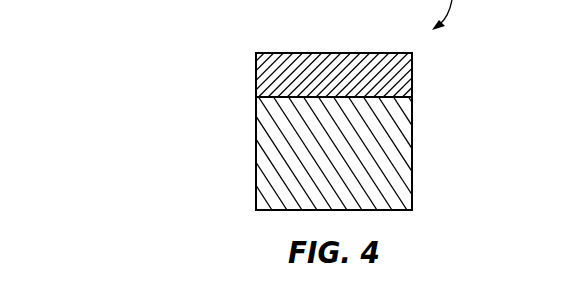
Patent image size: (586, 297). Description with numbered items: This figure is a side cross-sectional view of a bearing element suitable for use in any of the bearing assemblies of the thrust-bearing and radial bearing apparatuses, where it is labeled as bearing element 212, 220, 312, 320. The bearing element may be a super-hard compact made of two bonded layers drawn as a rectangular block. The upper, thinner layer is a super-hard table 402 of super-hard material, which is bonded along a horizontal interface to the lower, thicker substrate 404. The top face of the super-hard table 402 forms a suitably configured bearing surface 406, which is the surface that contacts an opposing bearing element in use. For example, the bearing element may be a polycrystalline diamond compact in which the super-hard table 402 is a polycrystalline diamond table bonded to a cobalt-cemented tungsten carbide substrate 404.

The substrate / seed layer stack 212 is at (211, 119).
The substrate / seed layer stack 220 is at (211, 119).
The substrate / seed layer stack 312 is at (211, 119).
The substrate / seed layer stack 320 is at (225, 92).
The super-hard table 402 is at (397, 78).
The substrate 404 is at (377, 155).
The bearing surface 406 is at (327, 52).